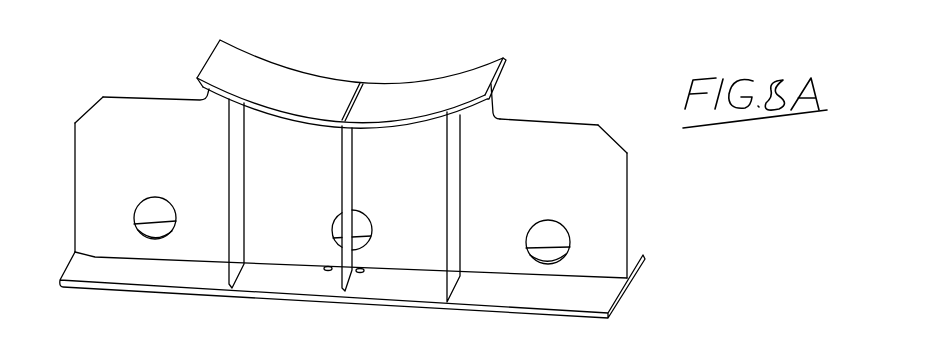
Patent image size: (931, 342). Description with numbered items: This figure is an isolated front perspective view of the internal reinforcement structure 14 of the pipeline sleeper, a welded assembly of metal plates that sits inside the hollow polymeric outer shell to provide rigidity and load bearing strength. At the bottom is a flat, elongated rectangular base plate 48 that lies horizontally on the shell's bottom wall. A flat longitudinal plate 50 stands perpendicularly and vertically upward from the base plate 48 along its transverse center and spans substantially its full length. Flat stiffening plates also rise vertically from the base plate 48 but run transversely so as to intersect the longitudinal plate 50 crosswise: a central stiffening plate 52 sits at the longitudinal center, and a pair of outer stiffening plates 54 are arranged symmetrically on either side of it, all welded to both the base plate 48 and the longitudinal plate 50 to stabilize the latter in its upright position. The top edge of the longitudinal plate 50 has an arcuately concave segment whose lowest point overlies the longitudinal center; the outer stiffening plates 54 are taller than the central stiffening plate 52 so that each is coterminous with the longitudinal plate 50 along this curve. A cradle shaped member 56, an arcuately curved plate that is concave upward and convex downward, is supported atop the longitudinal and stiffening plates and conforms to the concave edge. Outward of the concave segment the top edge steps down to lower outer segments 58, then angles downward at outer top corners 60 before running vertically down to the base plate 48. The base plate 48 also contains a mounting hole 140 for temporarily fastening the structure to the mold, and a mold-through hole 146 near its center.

The internal reinforcement structure 14 is at (527, 87).
The base plate 48 is at (603, 302).
The longitudinal plate 50 is at (613, 203).
The central stiffening plate 52 is at (346, 190).
The outer stiffening plate 54 is at (236, 194).
The cradle shaped member 56 is at (391, 92).
The outer segment 58 is at (145, 100).
The outer top corner 60 is at (87, 112).
The mounting hole 140 is at (367, 268).
The mold-through hole 146 is at (331, 266).